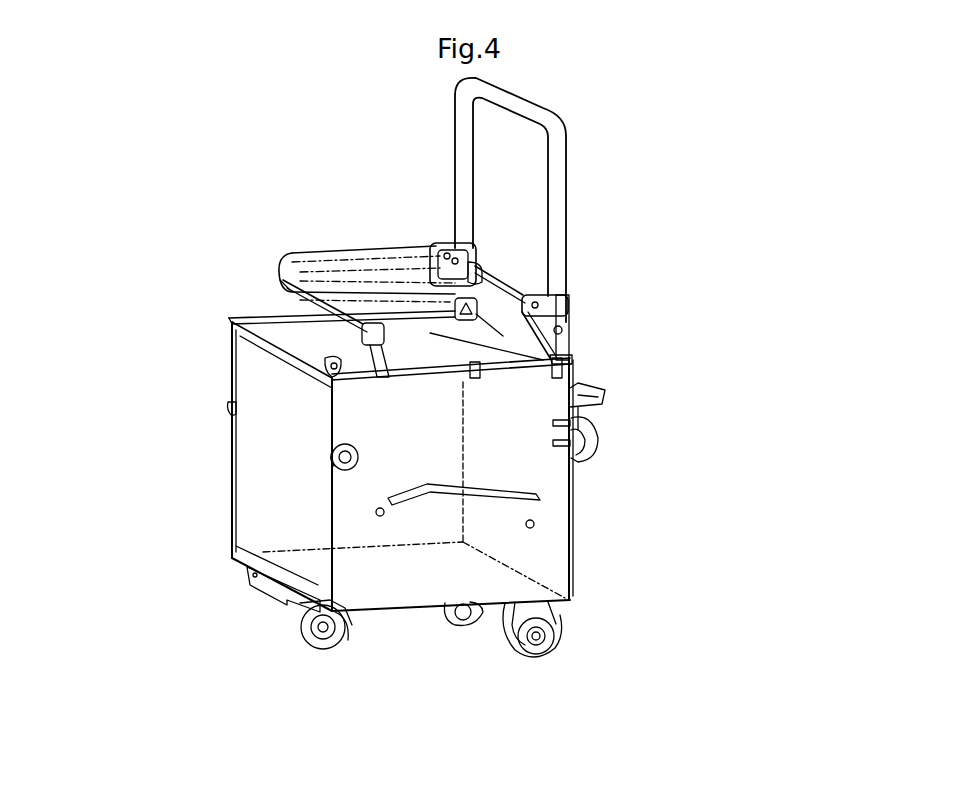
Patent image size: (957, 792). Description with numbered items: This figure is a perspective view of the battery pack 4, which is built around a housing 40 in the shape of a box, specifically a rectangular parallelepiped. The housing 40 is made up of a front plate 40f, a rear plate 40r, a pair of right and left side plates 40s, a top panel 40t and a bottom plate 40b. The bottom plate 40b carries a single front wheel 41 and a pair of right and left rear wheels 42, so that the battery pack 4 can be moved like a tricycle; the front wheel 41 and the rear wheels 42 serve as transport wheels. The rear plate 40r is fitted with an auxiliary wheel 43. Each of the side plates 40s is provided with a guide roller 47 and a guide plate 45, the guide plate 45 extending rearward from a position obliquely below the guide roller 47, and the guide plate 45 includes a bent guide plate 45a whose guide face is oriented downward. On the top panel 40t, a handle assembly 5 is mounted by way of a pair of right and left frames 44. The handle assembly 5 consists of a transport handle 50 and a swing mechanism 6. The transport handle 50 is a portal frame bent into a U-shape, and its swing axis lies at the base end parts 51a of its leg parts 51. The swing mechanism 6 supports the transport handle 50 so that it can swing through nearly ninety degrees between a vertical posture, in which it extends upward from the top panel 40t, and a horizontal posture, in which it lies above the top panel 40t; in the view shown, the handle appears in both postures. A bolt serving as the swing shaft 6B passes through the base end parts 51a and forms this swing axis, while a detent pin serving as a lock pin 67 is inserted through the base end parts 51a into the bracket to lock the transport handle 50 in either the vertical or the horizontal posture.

The battery pack 4 is at (212, 192).
The handle assembly 5 is at (602, 260).
The swing mechanism 6 is at (573, 347).
The swing shaft 6B is at (440, 268).
The housing 40 is at (200, 387).
The top panel 40t is at (276, 333).
The side plates 40s is at (272, 440).
The front plate 40f is at (258, 460).
The bottom plate 40b is at (303, 554).
The rear plate 40r is at (560, 511).
The front wheel 41 is at (300, 626).
The rear wheels 42 is at (505, 634).
The auxiliary wheel 43 is at (596, 447).
The frames 44 is at (500, 348).
The guide plate 45 is at (485, 472).
The bent guide plate 45a is at (455, 493).
The guide roller 47 is at (350, 447).
The transport handle 50 is at (560, 103).
The leg parts 51 is at (368, 255).
The base end parts 51a is at (385, 342).
The lock pin 67 is at (468, 248).